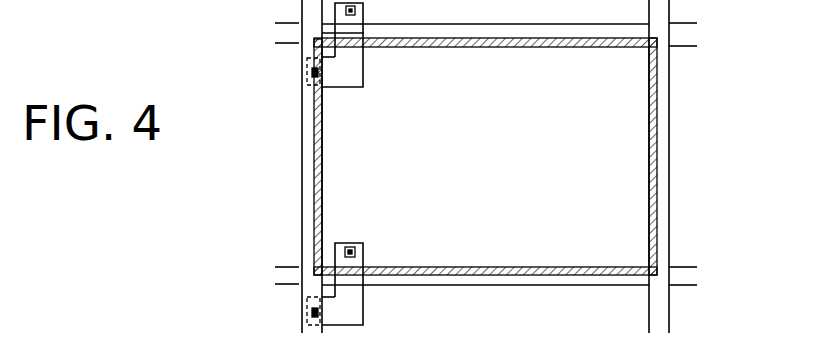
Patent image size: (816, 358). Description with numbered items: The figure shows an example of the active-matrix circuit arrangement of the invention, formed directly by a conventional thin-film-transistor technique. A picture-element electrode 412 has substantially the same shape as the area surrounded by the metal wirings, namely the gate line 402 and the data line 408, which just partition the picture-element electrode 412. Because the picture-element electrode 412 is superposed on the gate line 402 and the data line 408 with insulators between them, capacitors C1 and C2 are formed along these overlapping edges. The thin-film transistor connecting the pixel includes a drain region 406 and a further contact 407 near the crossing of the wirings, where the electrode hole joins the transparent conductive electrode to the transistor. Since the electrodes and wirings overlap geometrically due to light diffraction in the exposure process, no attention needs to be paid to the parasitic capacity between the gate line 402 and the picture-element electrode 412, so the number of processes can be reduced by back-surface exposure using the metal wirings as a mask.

The gate line 402 is at (280, 275).
The drain region 406 is at (350, 297).
The pixel electrode contact pad 407 is at (363, 243).
The data line 408 is at (313, 207).
The picture-element electrode 412 is at (638, 157).
The capacitor C1 is at (520, 266).
The capacitor C2 is at (493, 48).